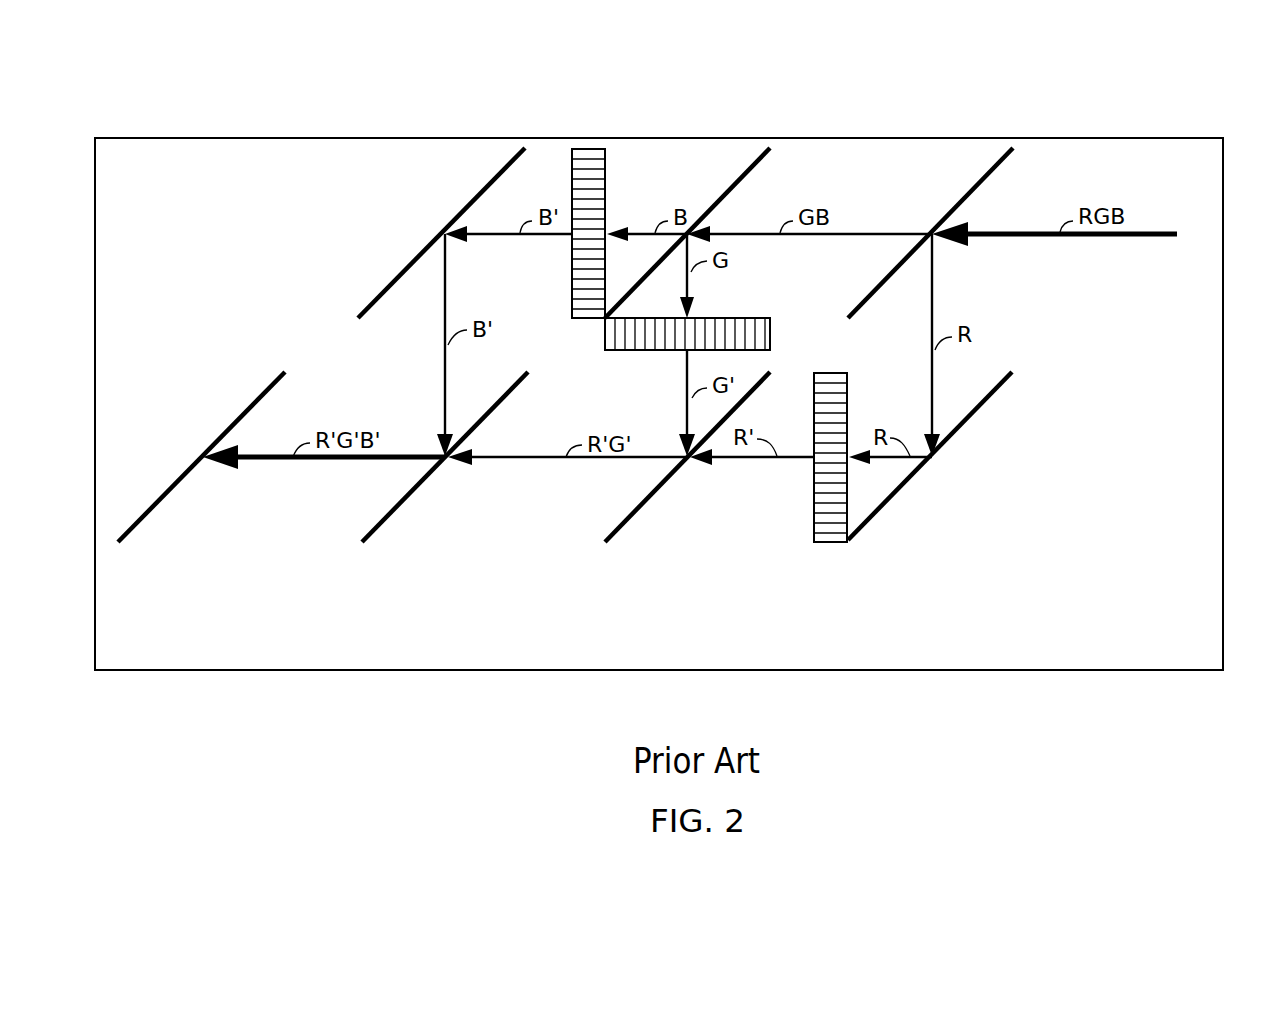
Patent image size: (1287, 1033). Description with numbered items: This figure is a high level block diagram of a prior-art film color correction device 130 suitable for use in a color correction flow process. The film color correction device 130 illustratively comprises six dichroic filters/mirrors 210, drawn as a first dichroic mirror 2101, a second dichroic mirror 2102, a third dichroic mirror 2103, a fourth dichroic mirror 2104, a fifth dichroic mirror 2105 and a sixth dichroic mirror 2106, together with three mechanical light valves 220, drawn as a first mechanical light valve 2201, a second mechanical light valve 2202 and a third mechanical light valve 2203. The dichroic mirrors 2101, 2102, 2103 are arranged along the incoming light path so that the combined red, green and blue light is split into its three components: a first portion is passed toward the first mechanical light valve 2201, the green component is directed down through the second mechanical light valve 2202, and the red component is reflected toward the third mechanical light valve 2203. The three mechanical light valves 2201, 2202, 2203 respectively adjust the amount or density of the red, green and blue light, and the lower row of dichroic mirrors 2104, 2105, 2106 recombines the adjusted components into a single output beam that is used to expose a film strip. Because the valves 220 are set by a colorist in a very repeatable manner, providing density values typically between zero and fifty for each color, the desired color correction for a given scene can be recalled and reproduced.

The film color correction device 130 is at (1186, 94).
The dichroic filters/mirrors 210 is at (883, 503).
The first dichroic filter/mirror 2101 is at (515, 157).
The second dichroic filter/mirror 2102 is at (763, 150).
The third dichroic filter/mirror 2103 is at (1005, 153).
The fourth dichroic filter/mirror 2104 is at (378, 522).
The fifth dichroic filter/mirror 2105 is at (612, 530).
The sixth dichroic filter/mirror 2106 is at (995, 390).
The mechanical light valves 220 is at (813, 513).
The first mechanical light valve 2201 is at (590, 148).
The second mechanical light valve 2202 is at (728, 318).
The third mechanical light valve 2203 is at (830, 373).